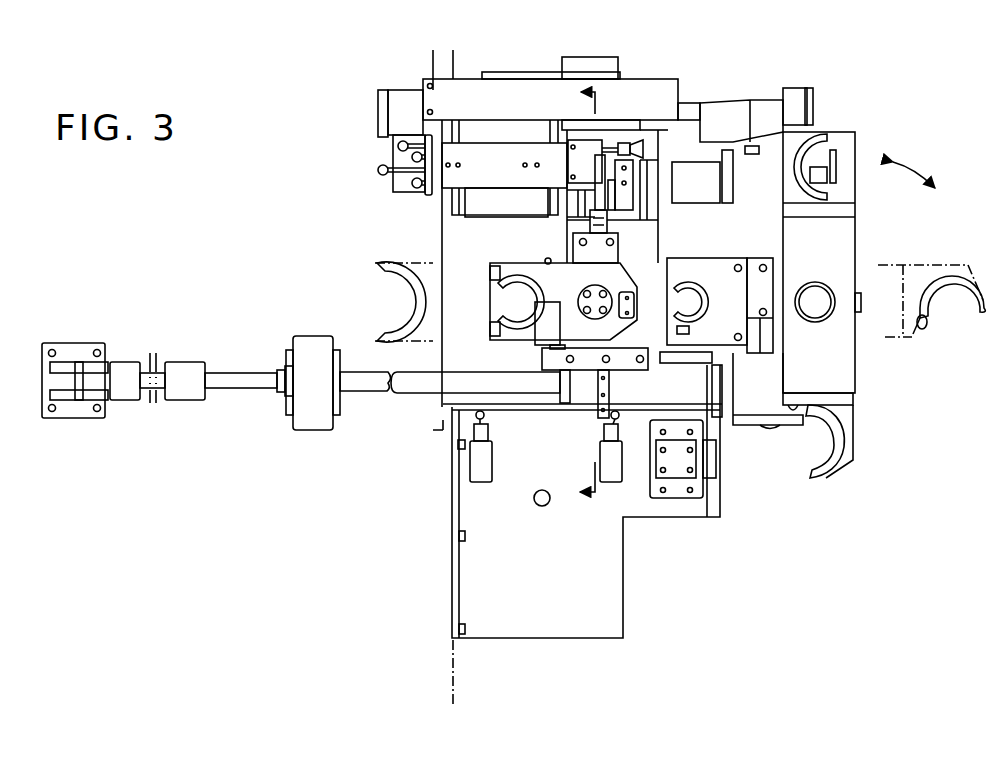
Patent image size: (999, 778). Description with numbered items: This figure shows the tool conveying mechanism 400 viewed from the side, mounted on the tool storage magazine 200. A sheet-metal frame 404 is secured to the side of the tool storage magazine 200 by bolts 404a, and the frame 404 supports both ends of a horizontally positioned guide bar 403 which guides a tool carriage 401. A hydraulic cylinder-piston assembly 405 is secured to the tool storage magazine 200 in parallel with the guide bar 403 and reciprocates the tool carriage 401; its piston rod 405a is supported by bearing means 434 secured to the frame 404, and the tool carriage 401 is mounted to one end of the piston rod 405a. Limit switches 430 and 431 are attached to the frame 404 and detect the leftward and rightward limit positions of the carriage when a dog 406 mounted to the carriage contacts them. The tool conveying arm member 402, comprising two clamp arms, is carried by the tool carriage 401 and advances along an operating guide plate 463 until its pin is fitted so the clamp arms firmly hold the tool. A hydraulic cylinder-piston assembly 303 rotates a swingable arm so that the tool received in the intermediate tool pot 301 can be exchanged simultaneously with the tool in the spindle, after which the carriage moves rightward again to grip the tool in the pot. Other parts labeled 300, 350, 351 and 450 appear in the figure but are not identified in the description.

The tool conveying mechanism 400 is at (353, 160).
The slide plate 450 is at (524, 264).
The tool conveying arm member 402 is at (545, 291).
The guide bar 403 is at (475, 381).
The tool carriage 401 is at (656, 240).
The intermediate tool pot 301 is at (706, 272).
The swing cam 351 is at (845, 230).
The swing arm body 350 is at (845, 376).
The clamp unit 300 is at (749, 408).
The hydraulic cylinder-piston assembly 303 is at (706, 470).
The operating guide plate 463 is at (630, 366).
The dog 406 is at (600, 413).
The limit switch 430 is at (483, 472).
The limit switch 431 is at (610, 474).
The frame 404 is at (620, 581).
The bolts 404a is at (462, 446).
The hydraulic cylinder-piston assembly 405 is at (185, 402).
The bearing means 434 is at (312, 432).
The piston rod 405a is at (355, 394).
The tool storage magazine 200 is at (440, 686).